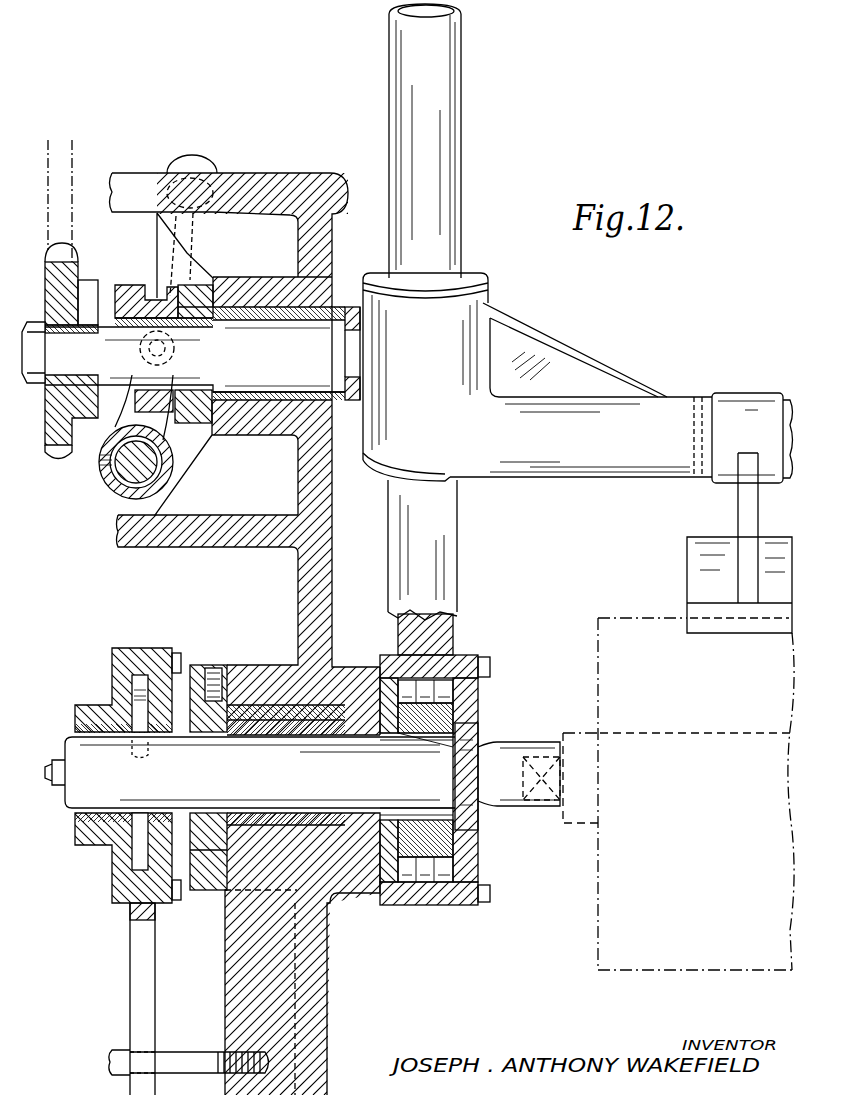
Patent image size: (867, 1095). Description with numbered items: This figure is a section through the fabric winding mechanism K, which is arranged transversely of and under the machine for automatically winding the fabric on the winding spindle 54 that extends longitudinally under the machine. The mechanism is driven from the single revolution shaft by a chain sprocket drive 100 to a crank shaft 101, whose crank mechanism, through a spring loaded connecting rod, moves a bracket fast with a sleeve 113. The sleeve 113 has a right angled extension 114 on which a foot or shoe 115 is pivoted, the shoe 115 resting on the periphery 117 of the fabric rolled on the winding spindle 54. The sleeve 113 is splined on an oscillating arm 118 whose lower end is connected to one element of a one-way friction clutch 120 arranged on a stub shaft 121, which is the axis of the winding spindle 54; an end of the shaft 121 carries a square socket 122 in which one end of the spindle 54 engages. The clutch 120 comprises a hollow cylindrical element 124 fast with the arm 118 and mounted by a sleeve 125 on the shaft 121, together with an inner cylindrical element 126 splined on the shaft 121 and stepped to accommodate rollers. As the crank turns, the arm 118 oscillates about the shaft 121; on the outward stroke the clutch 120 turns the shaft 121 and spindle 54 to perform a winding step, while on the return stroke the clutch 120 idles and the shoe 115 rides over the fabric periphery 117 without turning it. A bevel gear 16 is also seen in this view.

The chain sprocket drive 100 is at (76, 270).
The crank shaft 101 is at (195, 359).
The sleeve 113 is at (425, 377).
The right angled extension 114 is at (570, 437).
The foot or shoe 115 is at (698, 565).
The periphery of the fabric 117 is at (643, 622).
The oscillating arm 118 is at (448, 182).
The one-way friction clutch 120 is at (440, 897).
The stub shaft 121 is at (302, 776).
The square socket 122 is at (543, 722).
The hollow cylindrical element 124 is at (458, 658).
The sleeve 125 is at (230, 718).
The inner cylindrical element 126 is at (443, 847).
The bevel gearing 16 is at (715, 418).
The winding spindle 54 is at (577, 743).
The fabric winding mechanism K is at (561, 336).